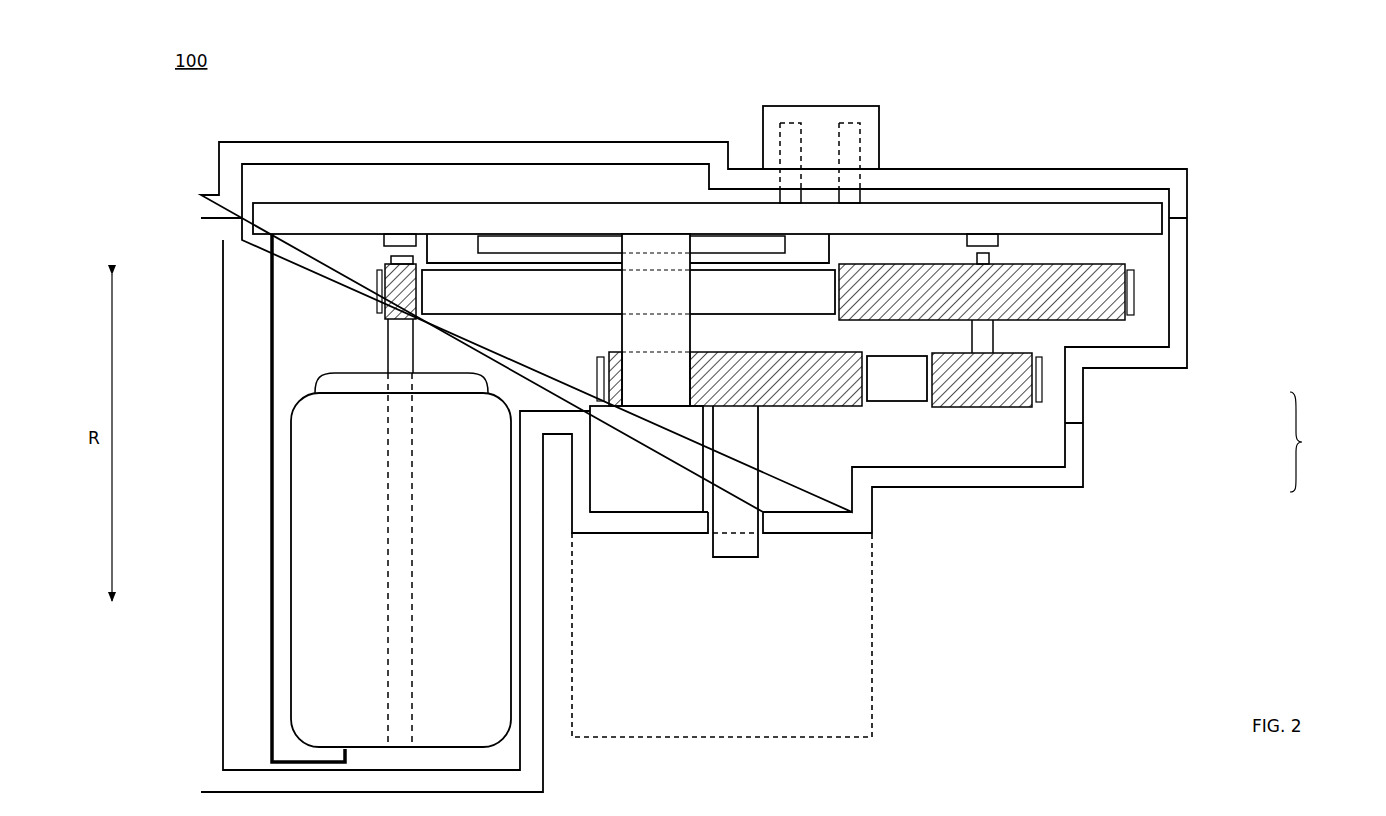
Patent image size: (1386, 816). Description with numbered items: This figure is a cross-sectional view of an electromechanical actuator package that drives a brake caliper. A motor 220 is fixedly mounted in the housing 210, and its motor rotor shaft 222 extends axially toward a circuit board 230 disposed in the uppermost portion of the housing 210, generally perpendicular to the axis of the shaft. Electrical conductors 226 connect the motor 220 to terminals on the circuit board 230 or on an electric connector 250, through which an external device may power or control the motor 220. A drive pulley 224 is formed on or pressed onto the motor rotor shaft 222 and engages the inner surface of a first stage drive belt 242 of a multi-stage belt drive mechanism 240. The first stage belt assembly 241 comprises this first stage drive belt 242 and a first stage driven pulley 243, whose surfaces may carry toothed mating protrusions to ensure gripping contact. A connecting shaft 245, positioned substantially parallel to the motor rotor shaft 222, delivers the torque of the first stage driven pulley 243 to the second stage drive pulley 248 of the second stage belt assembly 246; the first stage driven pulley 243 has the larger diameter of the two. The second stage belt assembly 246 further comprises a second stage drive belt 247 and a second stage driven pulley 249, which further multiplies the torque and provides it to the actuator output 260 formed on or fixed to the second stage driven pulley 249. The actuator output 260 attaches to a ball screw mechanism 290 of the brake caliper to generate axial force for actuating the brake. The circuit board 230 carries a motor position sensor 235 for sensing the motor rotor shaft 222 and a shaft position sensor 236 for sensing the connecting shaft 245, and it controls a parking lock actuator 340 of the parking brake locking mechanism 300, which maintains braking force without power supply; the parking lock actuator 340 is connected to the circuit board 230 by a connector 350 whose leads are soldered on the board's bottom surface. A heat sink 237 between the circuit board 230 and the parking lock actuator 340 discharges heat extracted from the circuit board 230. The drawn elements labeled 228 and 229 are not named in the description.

The housing 210 is at (1187, 197).
The motor 220 is at (456, 575).
The motor rotor shaft 222 is at (412, 527).
The drive pulley 224 is at (379, 307).
The electrical conductors 226 is at (270, 578).
The second spacer 228 is at (993, 256).
The first spacer 229 is at (390, 260).
The circuit board 230 is at (447, 216).
The motor position sensor 235 is at (383, 237).
The shaft position sensor 236 is at (967, 242).
The heat sink 237 is at (800, 252).
The multi-stage belt drive mechanism 240 is at (1318, 442).
The first stage belt assembly 241 is at (1152, 294).
The first stage drive belt 242 is at (485, 300).
The first stage driven pulley 243 is at (900, 320).
The connecting shaft 245 is at (1000, 330).
The second stage belt assembly 246 is at (1051, 382).
The second stage drive belt 247 is at (900, 402).
The second stage drive pulley 248 is at (1004, 409).
The second stage driven pulley 249 is at (808, 407).
The electric connector 250 is at (880, 115).
The actuator output 260 is at (760, 543).
The ball screw mechanism 290 is at (873, 652).
The parking brake locking mechanism 300 is at (705, 436).
The parking lock actuator 340 is at (646, 459).
The connector 350 is at (656, 320).